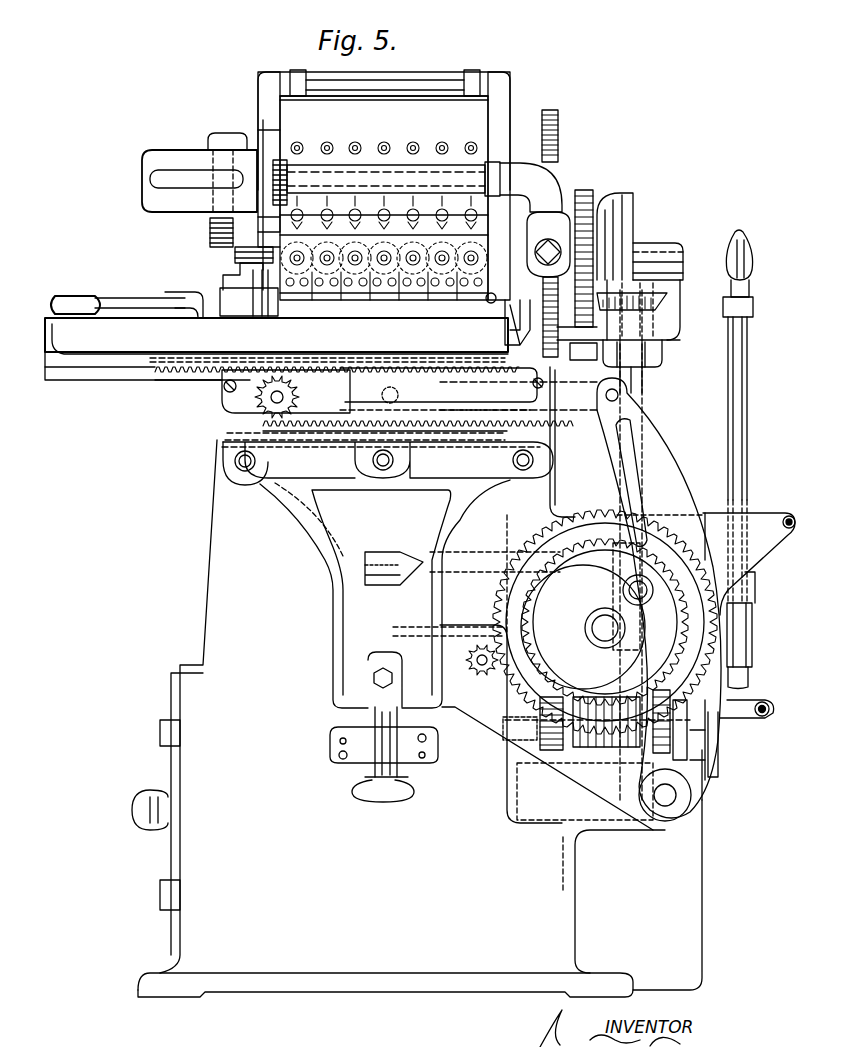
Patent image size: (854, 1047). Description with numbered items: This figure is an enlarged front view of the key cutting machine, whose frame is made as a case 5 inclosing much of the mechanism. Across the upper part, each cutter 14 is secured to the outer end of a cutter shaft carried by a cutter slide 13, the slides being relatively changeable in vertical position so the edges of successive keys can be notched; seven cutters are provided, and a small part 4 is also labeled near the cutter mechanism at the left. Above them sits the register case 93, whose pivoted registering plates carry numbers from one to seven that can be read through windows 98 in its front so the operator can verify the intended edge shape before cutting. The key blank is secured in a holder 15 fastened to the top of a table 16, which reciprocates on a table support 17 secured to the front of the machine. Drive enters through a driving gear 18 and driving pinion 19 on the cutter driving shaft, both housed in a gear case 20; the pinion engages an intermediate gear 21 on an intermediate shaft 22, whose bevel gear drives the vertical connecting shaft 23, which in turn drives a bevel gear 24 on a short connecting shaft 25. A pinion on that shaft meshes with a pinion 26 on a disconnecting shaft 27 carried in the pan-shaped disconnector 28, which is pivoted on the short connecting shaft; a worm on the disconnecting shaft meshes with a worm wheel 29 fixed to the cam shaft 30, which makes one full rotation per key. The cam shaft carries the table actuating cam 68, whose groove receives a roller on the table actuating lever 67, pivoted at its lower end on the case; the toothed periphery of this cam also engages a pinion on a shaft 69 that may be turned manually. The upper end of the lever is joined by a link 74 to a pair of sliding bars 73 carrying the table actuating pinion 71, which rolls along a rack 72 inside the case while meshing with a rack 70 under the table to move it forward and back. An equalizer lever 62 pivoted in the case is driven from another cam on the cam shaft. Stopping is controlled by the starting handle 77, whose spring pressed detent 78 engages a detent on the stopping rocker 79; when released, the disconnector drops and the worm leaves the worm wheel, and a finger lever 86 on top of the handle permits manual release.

The bracket 4 is at (265, 272).
The case 5 is at (212, 560).
The cutter slide 13 is at (384, 261).
The cutter 14 is at (450, 222).
The holder 15 is at (258, 290).
The table 16 is at (110, 348).
The table support 17 is at (218, 430).
The driving gear 18 is at (558, 118).
The driving pinion 19 is at (590, 200).
The gear case 20 is at (612, 200).
The intermediate gear 21 is at (585, 354).
The intermediate shaft 22 is at (683, 258).
The connecting shaft 23 is at (645, 393).
The bevel gear 24 is at (712, 762).
The short connecting shaft 25 is at (718, 722).
The pinion 26 is at (548, 755).
The disconnecting shaft 27 is at (520, 718).
The disconnector 28 is at (585, 765).
The worm wheel 29 is at (568, 578).
The cam shaft 30 is at (602, 628).
The equalizer lever 62 is at (423, 557).
The table actuating lever 67 is at (623, 458).
The table actuating cam 68 is at (545, 540).
The shaft 69 is at (478, 665).
The rack 70 is at (170, 370).
The table actuating pinion 71 is at (290, 397).
The rack 72 is at (303, 435).
The sliding bars 73 is at (262, 425).
The link 74 is at (572, 403).
The starting handle 77 is at (763, 458).
The spring pressed detent 78 is at (745, 665).
The stopping rocker 79 is at (745, 682).
The finger lever 86 is at (750, 268).
The register case 93 is at (488, 106).
The windows 98 is at (324, 138).